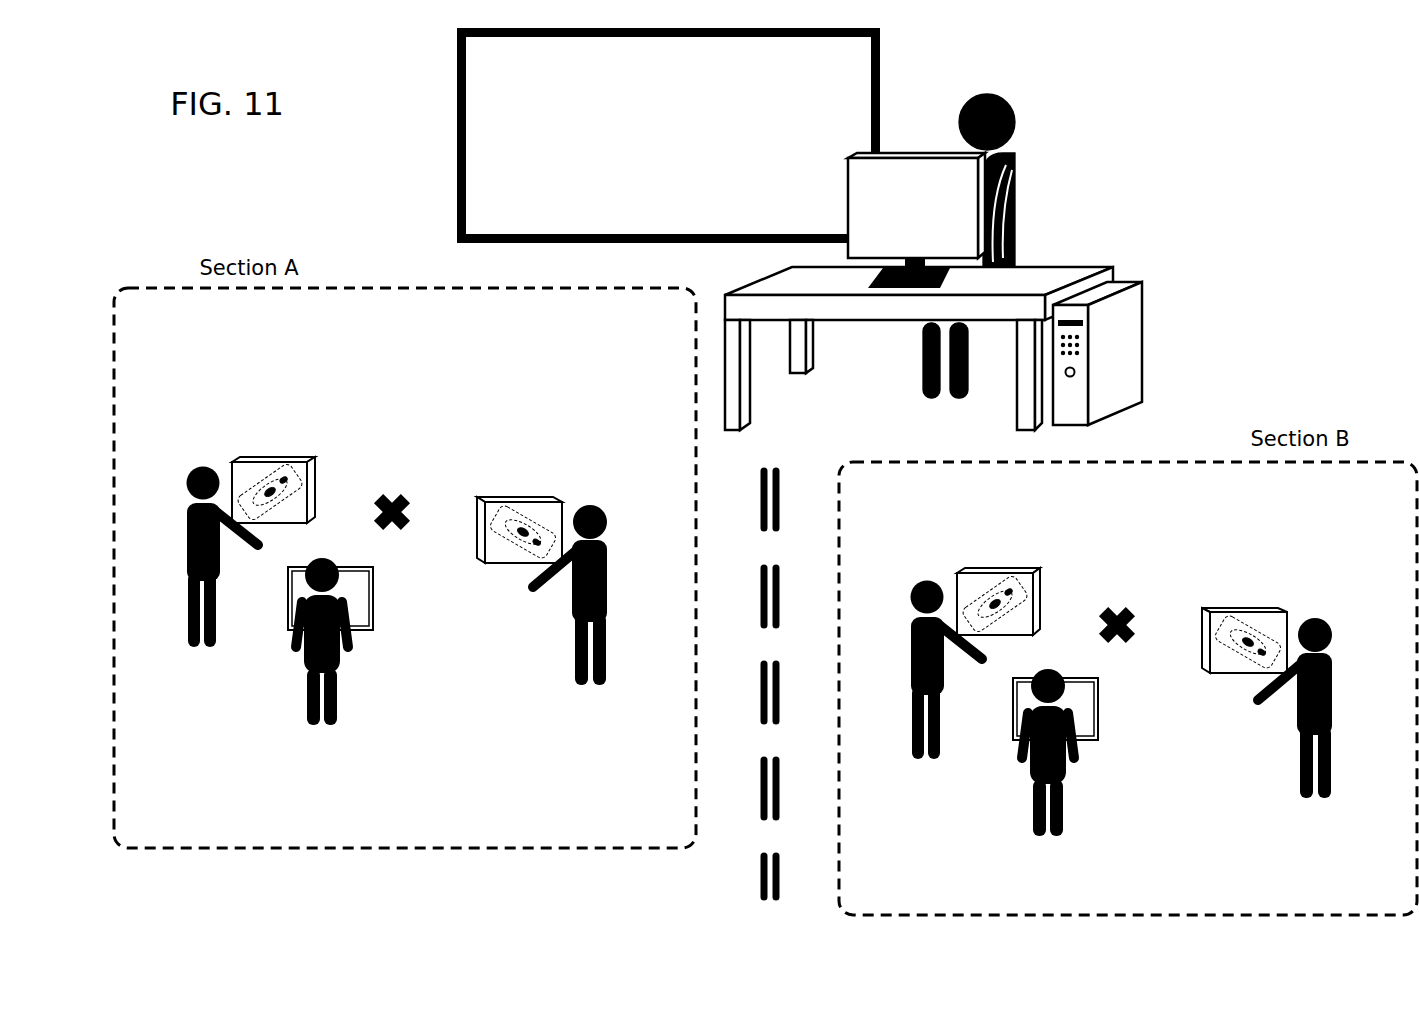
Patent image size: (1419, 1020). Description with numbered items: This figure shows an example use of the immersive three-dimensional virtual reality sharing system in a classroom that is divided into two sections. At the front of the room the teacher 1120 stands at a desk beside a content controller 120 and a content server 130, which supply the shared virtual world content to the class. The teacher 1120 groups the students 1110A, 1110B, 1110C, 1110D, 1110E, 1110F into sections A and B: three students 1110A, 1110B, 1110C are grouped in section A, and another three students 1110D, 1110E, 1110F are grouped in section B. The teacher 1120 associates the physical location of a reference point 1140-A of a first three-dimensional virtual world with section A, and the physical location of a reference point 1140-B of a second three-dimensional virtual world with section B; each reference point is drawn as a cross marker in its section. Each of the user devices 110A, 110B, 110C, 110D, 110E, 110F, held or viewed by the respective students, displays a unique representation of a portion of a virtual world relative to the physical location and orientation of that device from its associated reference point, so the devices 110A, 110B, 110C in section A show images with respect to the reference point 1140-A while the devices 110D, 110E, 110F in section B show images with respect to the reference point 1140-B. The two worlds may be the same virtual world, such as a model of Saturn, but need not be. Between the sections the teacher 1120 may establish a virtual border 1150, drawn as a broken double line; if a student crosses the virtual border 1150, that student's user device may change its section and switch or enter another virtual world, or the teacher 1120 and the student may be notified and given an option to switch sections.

The content controller 120 is at (897, 126).
The teacher 1120 is at (1032, 178).
The content server 130 is at (1158, 287).
The user device 110A is at (287, 452).
The user device 110B is at (513, 487).
The user device 110C is at (378, 589).
The user device 110D is at (1103, 701).
The user device 110E is at (1012, 563).
The user device 110F is at (1238, 599).
The student 1110A is at (203, 653).
The student 1110B is at (557, 690).
The student 1110C is at (300, 738).
The student 1110D is at (1088, 807).
The student 1110E is at (923, 765).
The student 1110F is at (1283, 803).
The reference point 1140-A is at (400, 463).
The reference point 1140-B is at (1137, 596).
The virtual border 1150 is at (745, 865).